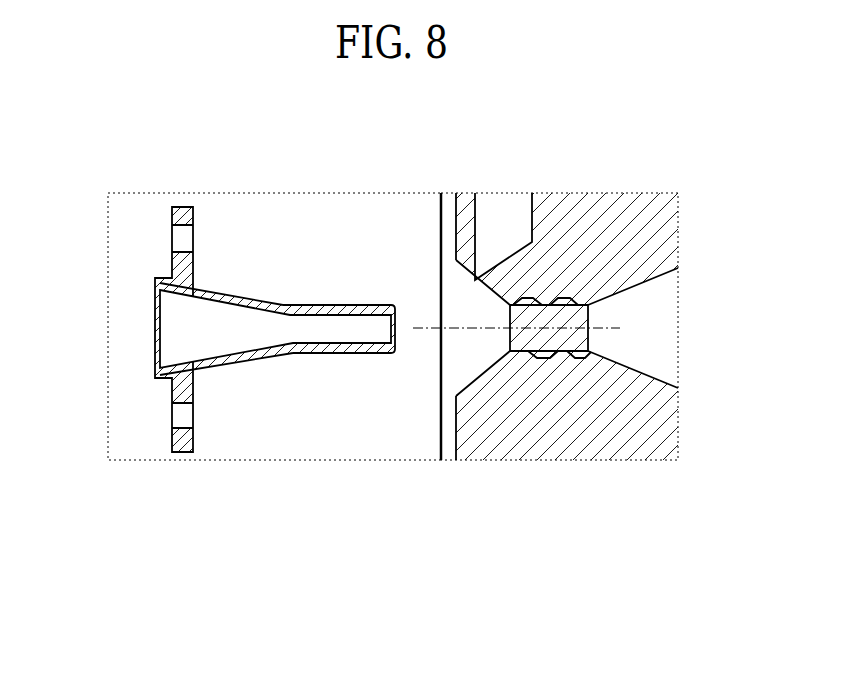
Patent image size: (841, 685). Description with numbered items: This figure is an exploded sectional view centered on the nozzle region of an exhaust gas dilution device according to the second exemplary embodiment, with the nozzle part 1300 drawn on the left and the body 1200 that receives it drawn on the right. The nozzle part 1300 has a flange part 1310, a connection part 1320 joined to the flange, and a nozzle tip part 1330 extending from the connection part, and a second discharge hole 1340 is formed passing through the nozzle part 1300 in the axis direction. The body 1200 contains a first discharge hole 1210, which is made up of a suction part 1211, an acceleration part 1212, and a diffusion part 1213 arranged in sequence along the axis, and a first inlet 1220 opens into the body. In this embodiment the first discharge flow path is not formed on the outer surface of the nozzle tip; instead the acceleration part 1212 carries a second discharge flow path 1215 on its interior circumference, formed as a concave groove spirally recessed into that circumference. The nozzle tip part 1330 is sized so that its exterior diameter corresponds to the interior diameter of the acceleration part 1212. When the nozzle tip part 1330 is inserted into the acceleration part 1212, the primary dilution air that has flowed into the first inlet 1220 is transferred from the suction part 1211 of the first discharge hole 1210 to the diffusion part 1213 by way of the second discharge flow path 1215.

The nozzle body 1200 is at (518, 353).
The first discharge hole 1210 is at (567, 417).
The suction part 1211 is at (502, 360).
The acceleration part 1212 is at (558, 357).
The diffusion part 1213 is at (633, 370).
The second discharge flow path 1215 is at (563, 297).
The first inlet 1220 is at (490, 212).
The nozzle part 1300 is at (316, 295).
The flange part 1310 is at (189, 205).
The connection part 1320 is at (247, 292).
The nozzle tip part 1330 is at (340, 304).
The second discharge hole 1340 is at (171, 334).